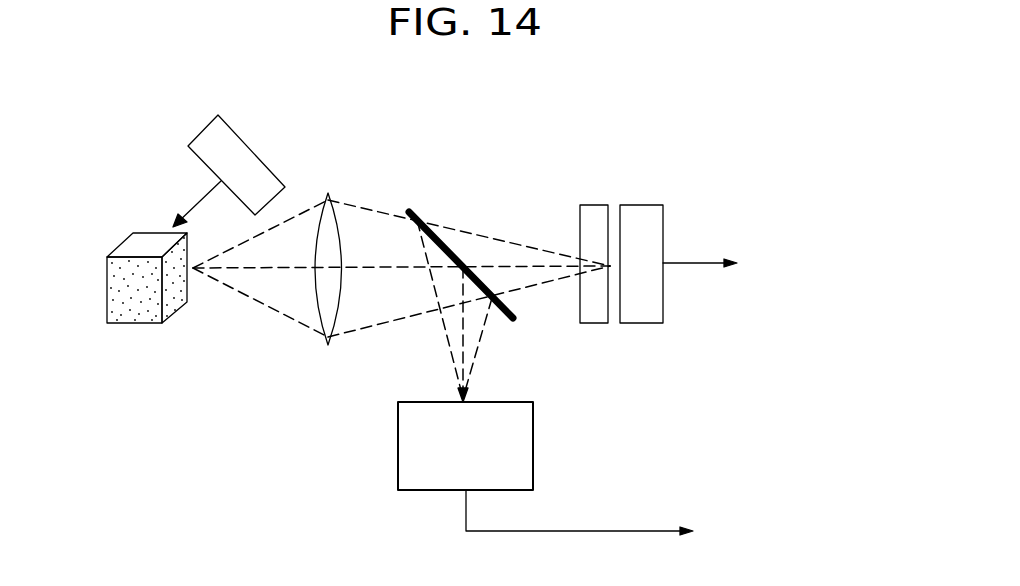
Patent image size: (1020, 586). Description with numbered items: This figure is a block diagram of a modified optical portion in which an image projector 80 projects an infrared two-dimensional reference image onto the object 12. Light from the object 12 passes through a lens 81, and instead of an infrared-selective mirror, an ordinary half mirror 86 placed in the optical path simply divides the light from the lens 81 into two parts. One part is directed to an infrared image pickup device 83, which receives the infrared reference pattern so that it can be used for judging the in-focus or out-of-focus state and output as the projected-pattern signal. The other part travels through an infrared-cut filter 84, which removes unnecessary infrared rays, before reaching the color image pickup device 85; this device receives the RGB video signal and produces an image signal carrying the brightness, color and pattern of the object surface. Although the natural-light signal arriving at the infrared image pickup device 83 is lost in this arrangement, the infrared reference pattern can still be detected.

The object 12 is at (133, 323).
The image projector 80 is at (237, 147).
The lens 81 is at (328, 338).
The half mirror 86 is at (413, 218).
The infrared-cut filter 84 is at (595, 212).
The color image pickup device 85 is at (645, 317).
The infrared image pickup device 83 is at (533, 438).